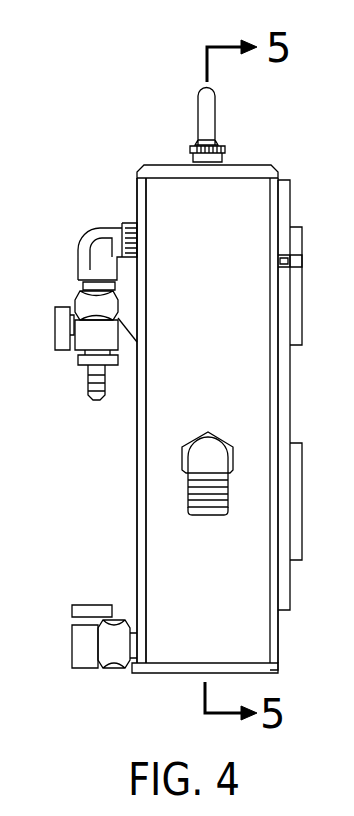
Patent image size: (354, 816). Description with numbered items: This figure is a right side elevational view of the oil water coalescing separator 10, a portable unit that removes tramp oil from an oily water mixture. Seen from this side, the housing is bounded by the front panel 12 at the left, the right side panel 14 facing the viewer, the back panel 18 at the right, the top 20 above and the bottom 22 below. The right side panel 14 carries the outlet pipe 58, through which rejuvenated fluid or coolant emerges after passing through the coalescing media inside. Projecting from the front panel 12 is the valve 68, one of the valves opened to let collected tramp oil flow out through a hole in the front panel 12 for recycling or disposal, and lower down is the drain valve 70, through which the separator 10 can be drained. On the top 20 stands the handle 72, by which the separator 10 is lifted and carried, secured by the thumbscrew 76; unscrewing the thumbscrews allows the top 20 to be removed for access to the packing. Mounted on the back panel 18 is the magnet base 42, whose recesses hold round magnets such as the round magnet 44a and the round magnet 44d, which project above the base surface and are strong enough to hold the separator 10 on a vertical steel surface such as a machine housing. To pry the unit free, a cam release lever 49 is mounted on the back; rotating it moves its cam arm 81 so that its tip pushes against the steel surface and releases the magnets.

The oil water coalescing separator 10 is at (143, 673).
The front panel 12 is at (137, 497).
The right side panel 14 is at (160, 548).
The back panel 18 is at (280, 638).
The top 20 is at (160, 165).
The bottom 22 is at (180, 673).
The magnet base 42 is at (292, 583).
The round magnet 44a is at (305, 330).
The round magnet 44d is at (305, 510).
The cam release lever 49 is at (285, 256).
The cam arm 81 is at (296, 262).
The outlet pipe 58 is at (213, 448).
The valve 68 is at (92, 226).
The drain valve 70 is at (80, 648).
The handle 72 is at (198, 97).
The thumbscrew 76 is at (222, 154).